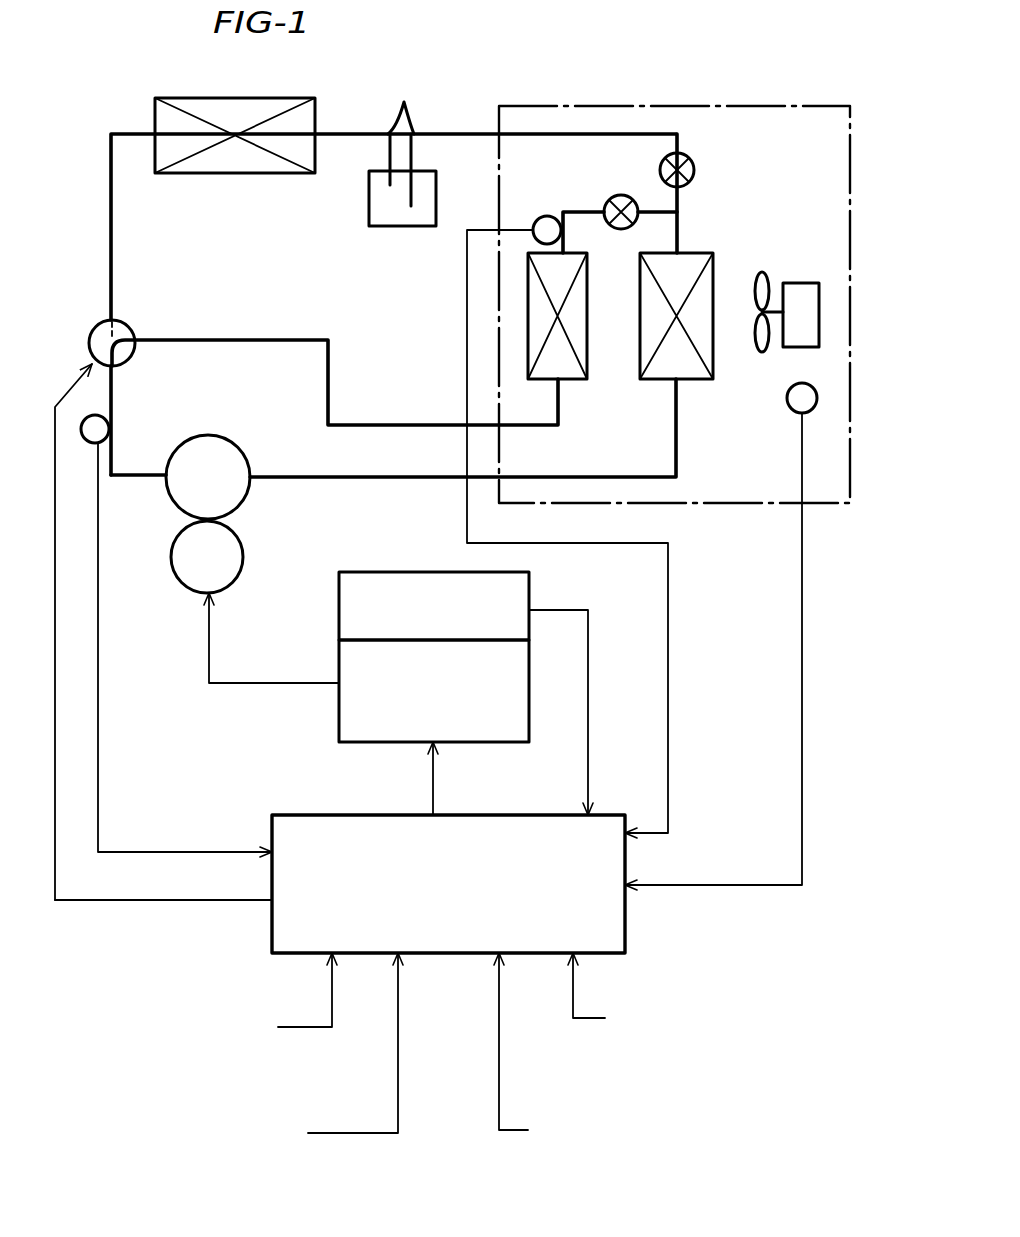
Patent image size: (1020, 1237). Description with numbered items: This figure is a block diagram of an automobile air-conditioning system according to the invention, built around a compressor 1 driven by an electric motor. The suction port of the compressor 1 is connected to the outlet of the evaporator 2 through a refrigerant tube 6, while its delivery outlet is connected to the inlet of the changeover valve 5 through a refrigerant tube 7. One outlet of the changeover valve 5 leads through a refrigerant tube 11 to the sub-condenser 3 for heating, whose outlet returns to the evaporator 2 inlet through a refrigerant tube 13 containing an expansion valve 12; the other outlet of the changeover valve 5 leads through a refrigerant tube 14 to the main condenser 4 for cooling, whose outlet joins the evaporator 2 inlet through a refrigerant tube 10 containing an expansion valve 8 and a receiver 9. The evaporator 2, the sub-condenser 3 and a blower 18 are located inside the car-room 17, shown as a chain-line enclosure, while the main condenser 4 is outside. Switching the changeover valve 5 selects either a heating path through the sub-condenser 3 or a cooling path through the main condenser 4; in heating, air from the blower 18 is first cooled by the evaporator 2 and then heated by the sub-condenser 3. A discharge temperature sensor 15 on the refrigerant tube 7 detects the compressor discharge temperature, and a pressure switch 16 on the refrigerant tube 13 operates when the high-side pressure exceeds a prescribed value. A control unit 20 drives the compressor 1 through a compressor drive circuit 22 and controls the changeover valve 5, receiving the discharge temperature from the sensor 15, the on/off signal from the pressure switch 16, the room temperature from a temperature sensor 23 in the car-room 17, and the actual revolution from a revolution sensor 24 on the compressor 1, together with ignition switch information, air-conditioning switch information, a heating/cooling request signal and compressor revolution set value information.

The compressor 1 is at (238, 520).
The evaporator 2 is at (648, 380).
The sub-condenser for heating 3 is at (578, 380).
The main condenser for cooling 4 is at (266, 173).
The changeover valve 5 is at (118, 319).
The refrigerant tube 6 is at (293, 475).
The refrigerant tube 7 is at (111, 384).
The expansion valve 8 is at (694, 170).
The receiver 9 is at (407, 226).
The refrigerant tube 10 is at (407, 138).
The refrigerant tube 11 is at (283, 340).
The expansion valve 12 is at (630, 196).
The refrigerant tube 13 is at (578, 212).
The refrigerant tube 14 is at (111, 238).
The discharge temperature sensor 15 is at (93, 443).
The pressure switch 16 is at (538, 217).
The car-room 17 is at (745, 505).
The blower 18 is at (803, 283).
The control unit 20 is at (625, 937).
The compressor drive circuit 22 is at (339, 706).
The temperature sensor 23 is at (787, 400).
The revolution sensor 24 is at (404, 572).